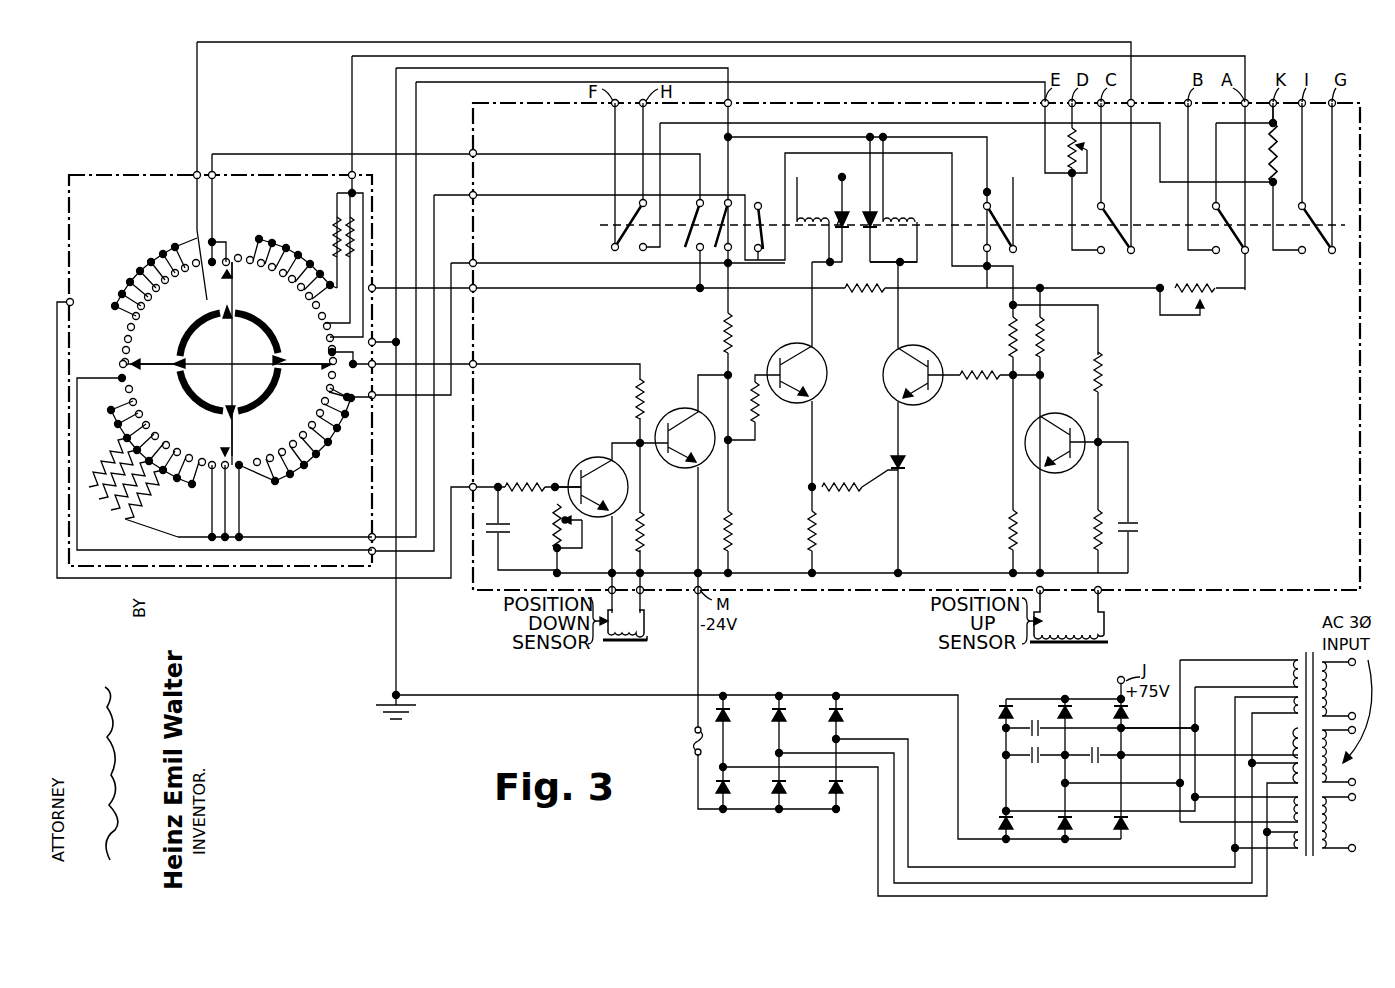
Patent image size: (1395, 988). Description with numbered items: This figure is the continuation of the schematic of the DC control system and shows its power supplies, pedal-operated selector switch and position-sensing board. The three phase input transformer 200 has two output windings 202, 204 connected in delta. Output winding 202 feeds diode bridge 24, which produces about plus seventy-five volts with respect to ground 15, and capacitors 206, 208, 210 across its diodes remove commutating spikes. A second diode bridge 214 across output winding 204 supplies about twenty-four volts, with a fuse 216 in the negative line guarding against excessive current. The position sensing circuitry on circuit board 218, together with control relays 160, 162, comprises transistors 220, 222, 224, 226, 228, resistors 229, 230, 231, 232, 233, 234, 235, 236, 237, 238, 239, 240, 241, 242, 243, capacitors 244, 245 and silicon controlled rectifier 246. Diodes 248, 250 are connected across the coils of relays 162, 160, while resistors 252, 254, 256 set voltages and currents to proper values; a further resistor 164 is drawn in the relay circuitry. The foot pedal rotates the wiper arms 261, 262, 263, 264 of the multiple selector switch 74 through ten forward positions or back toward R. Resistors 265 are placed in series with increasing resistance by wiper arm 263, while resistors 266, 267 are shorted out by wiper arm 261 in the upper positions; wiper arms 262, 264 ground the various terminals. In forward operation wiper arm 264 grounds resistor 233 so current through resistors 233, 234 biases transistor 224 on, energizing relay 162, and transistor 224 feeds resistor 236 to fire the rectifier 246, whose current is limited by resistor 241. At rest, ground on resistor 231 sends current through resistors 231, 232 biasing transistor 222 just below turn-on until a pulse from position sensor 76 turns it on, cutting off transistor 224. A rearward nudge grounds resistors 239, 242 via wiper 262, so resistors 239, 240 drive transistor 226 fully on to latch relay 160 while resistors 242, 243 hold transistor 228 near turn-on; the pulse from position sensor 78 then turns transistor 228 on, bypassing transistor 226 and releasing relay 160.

The ground 15 is at (376, 712).
The diode bridge 24 is at (1056, 845).
The multiple selector switch 74 is at (156, 260).
The position sensor 76 is at (636, 633).
The position sensor 78 is at (1092, 633).
The control relay 160 is at (1152, 226).
The control relay 162 is at (769, 228).
The resistor 164 is at (1076, 148).
The three phase input transformer 200 is at (1300, 852).
The output winding 202 is at (1296, 662).
The output winding 204 is at (1293, 768).
The capacitor 206 is at (1040, 718).
The capacitor 208 is at (1032, 764).
The capacitor 210 is at (1108, 762).
The diode bridge 214 is at (777, 694).
The fuse 216 is at (692, 739).
The circuit board 218 is at (816, 592).
The transistor 220 is at (579, 462).
The transistor 222 is at (667, 413).
The transistor 224 is at (766, 355).
The transistor 226 is at (890, 398).
The transistor 228 is at (1058, 413).
The resistor 229 is at (521, 480).
The resistor 230 is at (550, 537).
The resistor 231 is at (638, 391).
The resistor 232 is at (644, 519).
The resistor 233 is at (724, 331).
The resistor 234 is at (730, 514).
The resistor 235 is at (756, 423).
The resistor 236 is at (818, 533).
The resistor 237 is at (840, 484).
The resistor 238 is at (976, 381).
The resistor 239 is at (1008, 334).
The resistor 240 is at (1004, 536).
The resistor 241 is at (1046, 347).
The resistor 242 is at (1104, 376).
The resistor 243 is at (1092, 536).
The capacitor 244 is at (1128, 522).
The capacitor 245 is at (525, 520).
The silicon controlled rectifier 246 is at (906, 462).
The diode 248 is at (836, 217).
The diode 250 is at (870, 227).
The resistor 252 is at (863, 294).
The resistor 254 is at (1208, 294).
The resistor 256 is at (1270, 142).
The wiper arm 261 is at (235, 288).
The wiper arm 262 is at (157, 358).
The wiper arm 263 is at (226, 416).
The wiper arm 264 is at (294, 370).
The resistors 265 is at (116, 499).
The resistor 266 is at (340, 243).
The resistor 267 is at (338, 230).